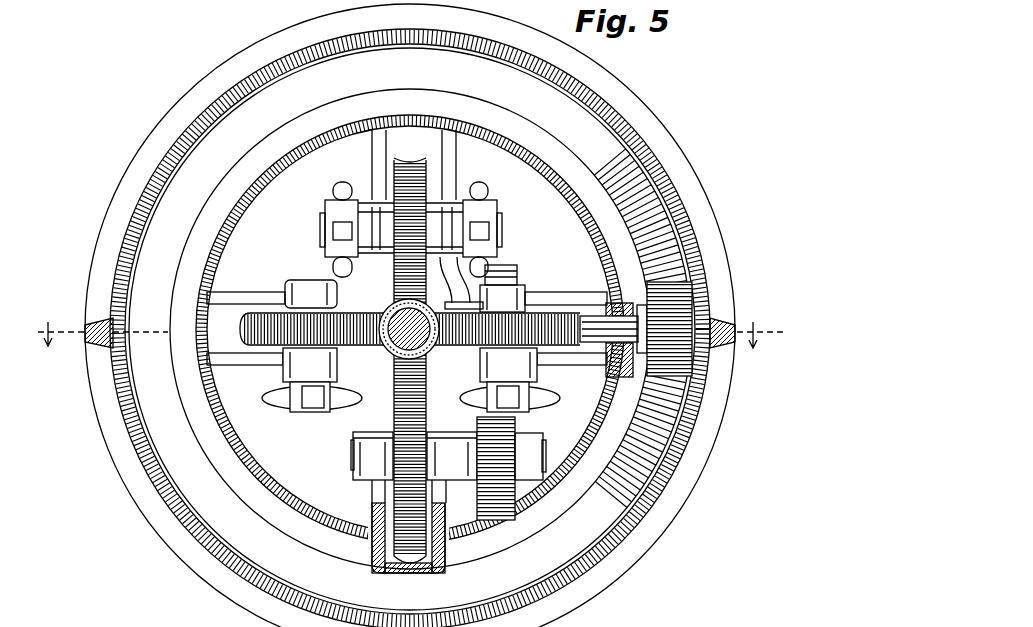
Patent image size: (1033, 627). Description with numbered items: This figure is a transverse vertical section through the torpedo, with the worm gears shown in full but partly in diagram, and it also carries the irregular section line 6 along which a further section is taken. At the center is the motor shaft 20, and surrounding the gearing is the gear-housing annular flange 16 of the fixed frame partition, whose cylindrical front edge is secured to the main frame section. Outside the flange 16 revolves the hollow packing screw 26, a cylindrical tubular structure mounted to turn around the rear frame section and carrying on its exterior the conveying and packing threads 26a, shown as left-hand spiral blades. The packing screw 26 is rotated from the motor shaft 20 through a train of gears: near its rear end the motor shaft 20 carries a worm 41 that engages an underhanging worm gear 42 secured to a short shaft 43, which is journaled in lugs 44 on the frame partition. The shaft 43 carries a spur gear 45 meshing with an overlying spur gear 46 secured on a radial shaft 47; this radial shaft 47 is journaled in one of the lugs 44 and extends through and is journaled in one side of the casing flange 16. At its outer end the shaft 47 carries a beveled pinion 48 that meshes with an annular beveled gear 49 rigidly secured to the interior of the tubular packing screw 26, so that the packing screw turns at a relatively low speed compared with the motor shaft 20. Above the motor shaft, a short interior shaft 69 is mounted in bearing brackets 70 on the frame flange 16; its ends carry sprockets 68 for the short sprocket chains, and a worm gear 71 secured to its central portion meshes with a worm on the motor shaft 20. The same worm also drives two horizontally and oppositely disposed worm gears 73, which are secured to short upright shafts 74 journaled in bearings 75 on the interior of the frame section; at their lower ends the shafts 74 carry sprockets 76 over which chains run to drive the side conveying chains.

The section line 6— 6 is at (402, 326).
The gear-housing annular flange 16 is at (560, 173).
The motor shaft 20 is at (422, 347).
The packing screw 26 is at (645, 148).
The conveying and packing threads 26a is at (688, 175).
The worm 41 is at (390, 308).
The worm gear 42 is at (397, 405).
The short shaft 43 is at (353, 453).
The lugs 44 is at (373, 497).
The spur gear 45 is at (490, 440).
The spur gear 46 is at (510, 265).
The radial shaft 47 is at (600, 342).
The beveled pinion 48 is at (672, 315).
The annular beveled gear 49 is at (650, 227).
The sprockets 68 is at (341, 182).
The short interior shaft 69 is at (500, 218).
The bearing brackets 70 is at (450, 176).
The worm gear 71 is at (414, 173).
The worm gears 73 is at (265, 312).
The upright shafts 74 is at (305, 280).
The bearings 75 is at (263, 364).
The sprockets 76 is at (287, 412).